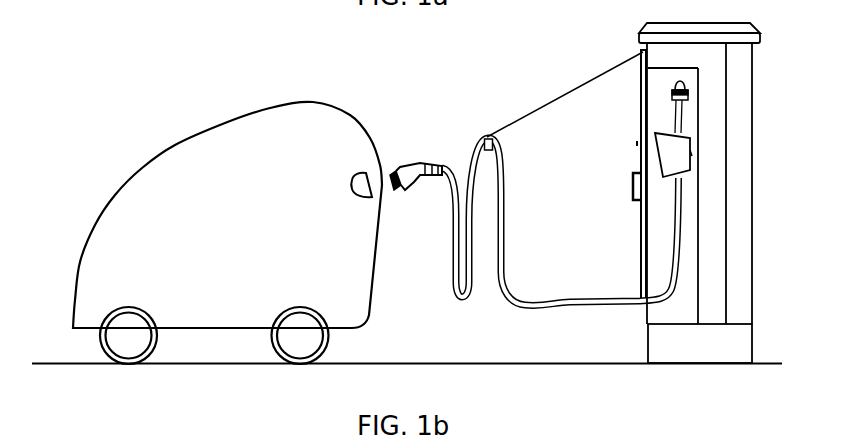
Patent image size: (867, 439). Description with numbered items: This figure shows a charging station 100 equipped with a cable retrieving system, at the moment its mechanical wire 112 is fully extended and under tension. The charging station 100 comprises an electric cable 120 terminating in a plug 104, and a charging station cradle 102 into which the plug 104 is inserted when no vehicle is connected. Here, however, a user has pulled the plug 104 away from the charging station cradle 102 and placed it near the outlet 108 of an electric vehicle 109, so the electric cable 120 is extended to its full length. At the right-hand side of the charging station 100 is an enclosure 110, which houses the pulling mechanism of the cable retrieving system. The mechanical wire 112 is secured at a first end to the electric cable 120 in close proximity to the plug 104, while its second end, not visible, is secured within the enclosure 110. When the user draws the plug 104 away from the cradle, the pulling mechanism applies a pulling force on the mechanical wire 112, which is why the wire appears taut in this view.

The charging station 100 is at (691, 22).
The charging station cradle 102 is at (663, 159).
The plug 104 is at (412, 166).
The outlet 108 is at (351, 183).
The electric vehicle 109 is at (247, 118).
The enclosure 110 is at (718, 134).
The mechanical wire 112 is at (557, 99).
The electric cable 120 is at (565, 304).